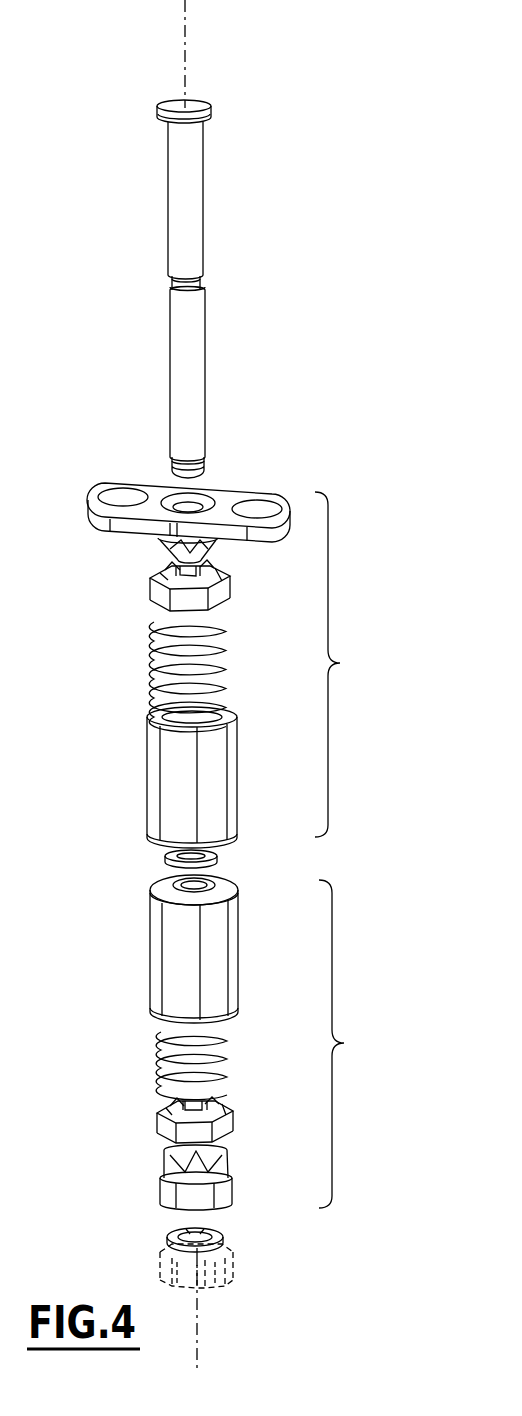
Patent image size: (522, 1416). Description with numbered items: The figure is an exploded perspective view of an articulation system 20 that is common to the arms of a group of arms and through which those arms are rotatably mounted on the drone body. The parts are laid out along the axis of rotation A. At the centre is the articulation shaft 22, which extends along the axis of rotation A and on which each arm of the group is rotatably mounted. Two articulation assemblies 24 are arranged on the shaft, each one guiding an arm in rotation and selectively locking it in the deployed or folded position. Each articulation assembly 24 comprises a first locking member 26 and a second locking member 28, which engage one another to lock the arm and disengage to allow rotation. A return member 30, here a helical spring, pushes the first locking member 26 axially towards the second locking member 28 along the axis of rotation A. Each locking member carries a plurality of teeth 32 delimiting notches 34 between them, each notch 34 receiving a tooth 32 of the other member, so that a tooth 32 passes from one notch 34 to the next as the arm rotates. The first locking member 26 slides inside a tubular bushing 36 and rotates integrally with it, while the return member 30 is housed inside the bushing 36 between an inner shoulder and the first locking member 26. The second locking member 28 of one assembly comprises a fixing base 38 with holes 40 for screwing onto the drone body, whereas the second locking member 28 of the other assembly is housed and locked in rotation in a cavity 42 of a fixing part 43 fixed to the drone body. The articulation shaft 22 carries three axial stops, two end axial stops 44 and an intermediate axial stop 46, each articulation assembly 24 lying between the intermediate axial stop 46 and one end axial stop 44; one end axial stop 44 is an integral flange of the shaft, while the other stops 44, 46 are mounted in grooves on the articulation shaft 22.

The axis of rotation A is at (187, 72).
The articulation system 20 is at (420, 623).
The articulation shaft 22 is at (207, 357).
The articulation assembly 24 is at (355, 644).
The first locking member 26 is at (230, 586).
The second locking member 28 is at (212, 546).
The return member 30 is at (230, 677).
The tooth 32 is at (150, 540).
The notch 34 is at (152, 570).
The tubular bushing 36 is at (230, 737).
The fixing base 38 is at (163, 462).
The holes 40 is at (115, 495).
The cavity 42 is at (232, 1238).
The fixing part 43 is at (240, 1254).
The end axial stop 44 is at (214, 116).
The intermediate axial stop 46 is at (165, 863).